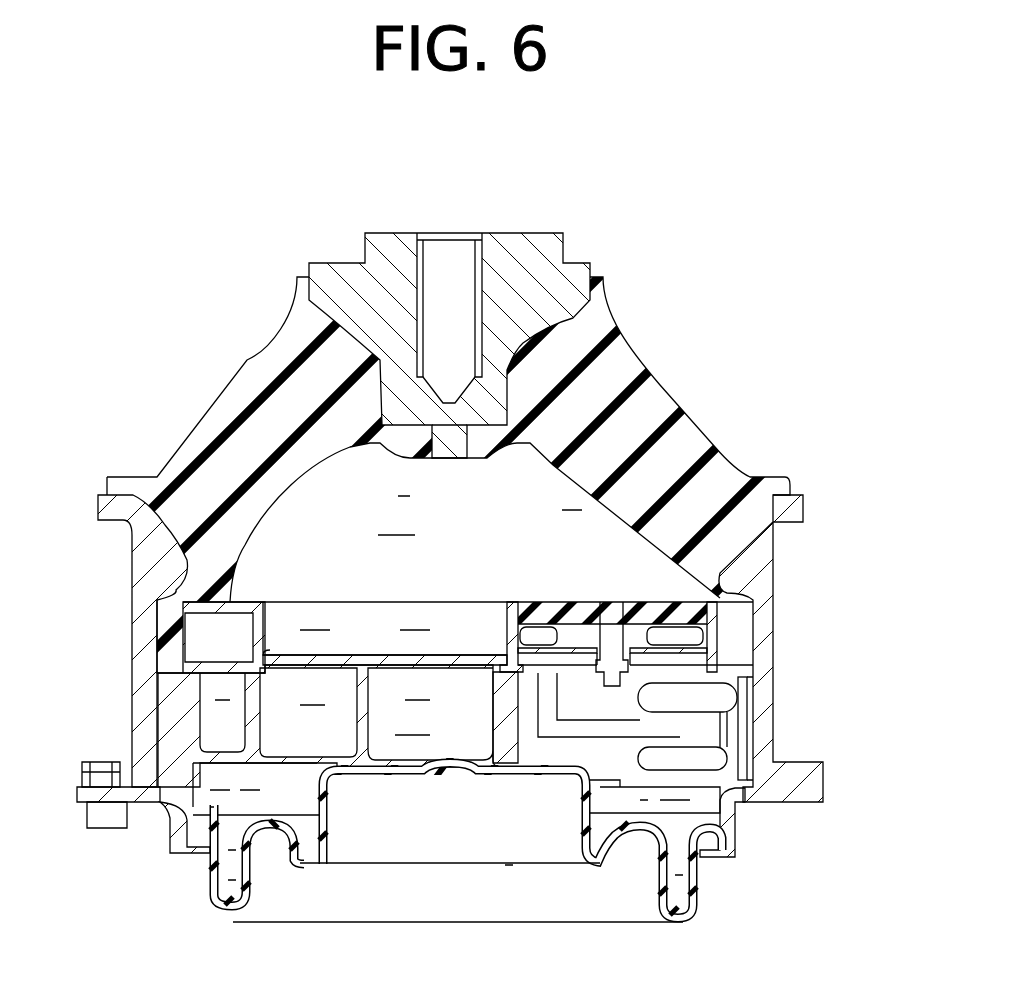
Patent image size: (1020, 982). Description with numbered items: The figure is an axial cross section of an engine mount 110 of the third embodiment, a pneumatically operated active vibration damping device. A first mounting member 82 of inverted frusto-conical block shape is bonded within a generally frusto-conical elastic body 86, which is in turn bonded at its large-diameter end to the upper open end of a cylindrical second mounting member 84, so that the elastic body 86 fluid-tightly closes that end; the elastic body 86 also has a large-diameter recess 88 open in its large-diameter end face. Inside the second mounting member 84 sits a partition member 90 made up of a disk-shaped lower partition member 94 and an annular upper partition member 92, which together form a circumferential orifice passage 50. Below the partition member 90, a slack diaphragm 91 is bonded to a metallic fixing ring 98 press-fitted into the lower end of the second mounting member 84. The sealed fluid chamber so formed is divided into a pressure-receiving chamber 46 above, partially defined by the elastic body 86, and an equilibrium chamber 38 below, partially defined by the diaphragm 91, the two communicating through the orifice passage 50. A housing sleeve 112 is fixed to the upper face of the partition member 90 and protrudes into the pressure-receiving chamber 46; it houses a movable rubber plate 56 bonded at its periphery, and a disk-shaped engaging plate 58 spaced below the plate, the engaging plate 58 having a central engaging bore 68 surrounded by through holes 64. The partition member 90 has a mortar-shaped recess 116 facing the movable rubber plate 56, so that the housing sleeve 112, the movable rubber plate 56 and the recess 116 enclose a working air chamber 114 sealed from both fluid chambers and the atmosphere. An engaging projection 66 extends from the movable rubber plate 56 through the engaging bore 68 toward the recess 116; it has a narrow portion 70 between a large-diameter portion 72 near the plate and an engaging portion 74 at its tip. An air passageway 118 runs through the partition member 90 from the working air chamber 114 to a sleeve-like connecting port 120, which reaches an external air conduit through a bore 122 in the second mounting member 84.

The engine mount 110 is at (650, 210).
The first mounting member 82 is at (388, 355).
The elastic body 86 is at (245, 407).
The pressure-receiving chamber 46 is at (330, 537).
The upper partition member 92 is at (237, 607).
The large-diameter recess 88 is at (550, 485).
The second mounting member 84 is at (145, 625).
The orifice passage 50 is at (217, 688).
The lower partition member 94 is at (180, 720).
The fixing ring 98 is at (143, 803).
The partition member 90 is at (278, 777).
The engaging plate 58 is at (525, 700).
The narrow portion 70 is at (585, 690).
The diaphragm 91 is at (585, 845).
The air passageway 118 is at (600, 745).
The equilibrium chamber 38 is at (678, 897).
The through holes 64 is at (537, 627).
The movable rubber plate 56 is at (552, 612).
The engaging projection 66 is at (578, 648).
The engaging bore 68 is at (607, 600).
The large-diameter portion 72 is at (640, 625).
The working air chamber 114 is at (700, 578).
The housing sleeve 112 is at (713, 616).
The recess 116 is at (740, 677).
The bore 122 is at (752, 693).
The engaging portion 74 is at (650, 690).
The connecting port 120 is at (700, 745).